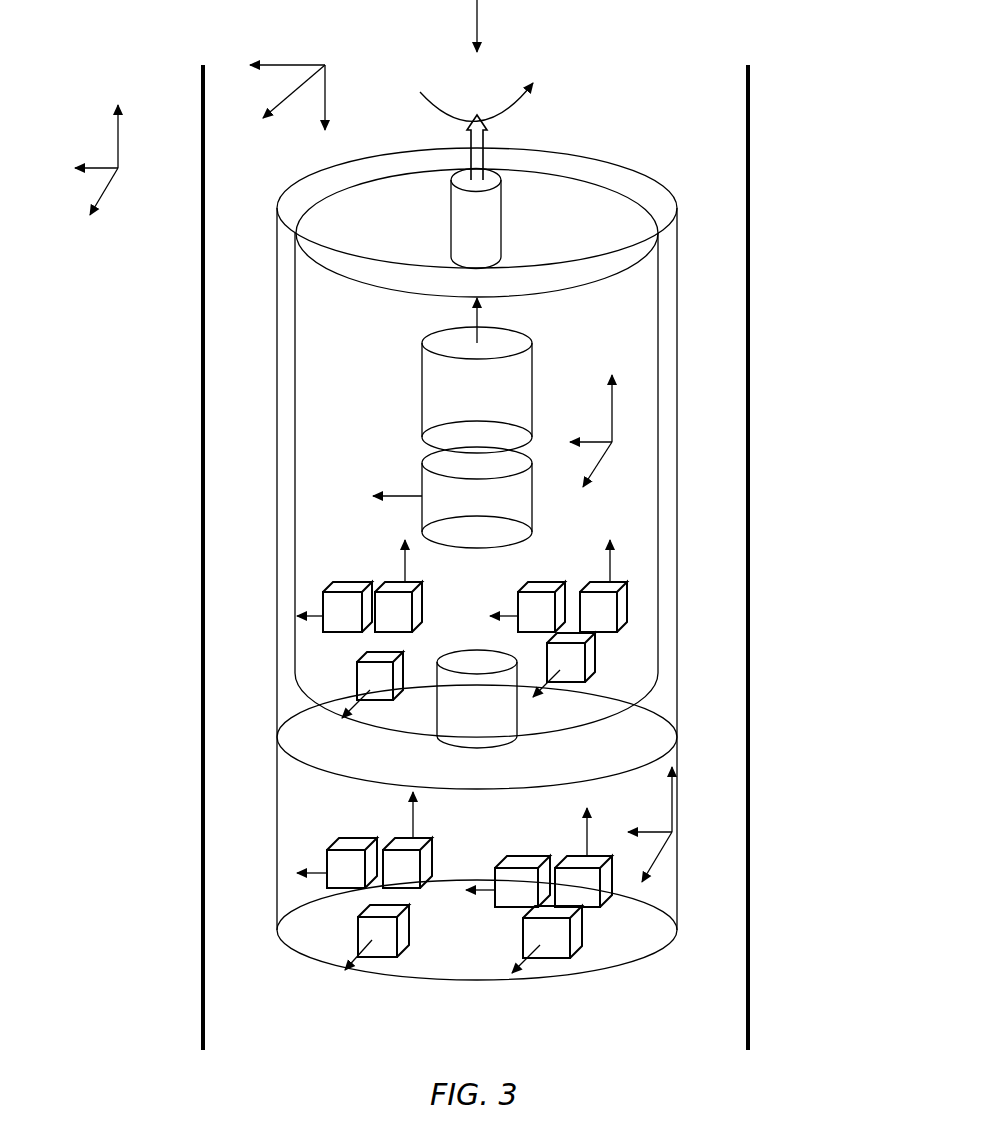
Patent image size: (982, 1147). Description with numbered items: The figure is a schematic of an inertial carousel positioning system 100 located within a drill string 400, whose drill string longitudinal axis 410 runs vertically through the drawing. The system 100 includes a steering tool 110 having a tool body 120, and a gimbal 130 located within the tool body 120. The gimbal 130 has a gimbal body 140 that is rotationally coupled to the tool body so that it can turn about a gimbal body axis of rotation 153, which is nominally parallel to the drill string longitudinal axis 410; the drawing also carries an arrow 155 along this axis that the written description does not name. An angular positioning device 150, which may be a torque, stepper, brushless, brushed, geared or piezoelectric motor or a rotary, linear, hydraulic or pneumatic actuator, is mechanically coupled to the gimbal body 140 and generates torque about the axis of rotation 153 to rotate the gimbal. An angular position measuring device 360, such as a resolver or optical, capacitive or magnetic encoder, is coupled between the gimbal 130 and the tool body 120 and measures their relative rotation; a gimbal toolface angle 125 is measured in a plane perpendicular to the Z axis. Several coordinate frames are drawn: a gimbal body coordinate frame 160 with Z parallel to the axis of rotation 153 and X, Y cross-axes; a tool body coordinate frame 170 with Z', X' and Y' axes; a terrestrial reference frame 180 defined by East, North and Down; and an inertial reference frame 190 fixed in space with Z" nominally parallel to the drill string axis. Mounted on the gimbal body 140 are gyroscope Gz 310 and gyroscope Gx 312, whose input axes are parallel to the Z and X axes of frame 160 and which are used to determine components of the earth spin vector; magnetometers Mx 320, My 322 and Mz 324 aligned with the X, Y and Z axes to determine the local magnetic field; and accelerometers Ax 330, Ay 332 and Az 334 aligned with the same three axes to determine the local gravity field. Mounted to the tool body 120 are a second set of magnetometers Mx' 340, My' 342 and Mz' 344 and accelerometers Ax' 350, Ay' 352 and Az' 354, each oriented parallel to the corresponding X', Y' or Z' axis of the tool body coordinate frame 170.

The inertial carousel positioning system 100 is at (677, 233).
The steering tool 110 is at (705, 451).
The tool body 120 is at (618, 163).
The gimbal toolface angle 125 is at (535, 100).
The gimbal 130 is at (287, 480).
The gimbal body 140 is at (652, 275).
The angular positioning device 150 is at (700, 733).
The gimbal body axis of rotation 153 is at (470, 137).
The upward direction arrow 155 is at (478, 116).
The gimbal body coordinate frame 160 is at (608, 473).
The tool body coordinate frame 170 is at (675, 845).
The terrestrial reference frame 180 is at (322, 62).
The inertial reference frame 190 is at (65, 208).
The gyroscope Gz 310 is at (422, 362).
The gyroscope Gx 312 is at (422, 478).
The magnetometer Mx 320 is at (615, 627).
The magnetometer My 322 is at (585, 660).
The magnetometer Mz 324 is at (627, 595).
The accelerometer Ax 330 is at (323, 593).
The accelerometer Ay 332 is at (357, 673).
The accelerometer Az 334 is at (375, 632).
The magnetometer Mx' 340 is at (502, 908).
The magnetometer My' 342 is at (590, 908).
The magnetometer Mz' 344 is at (553, 958).
The accelerometer Ax' 350 is at (327, 885).
The accelerometer Ay' 352 is at (387, 958).
The accelerometer Az' 354 is at (383, 888).
The angular position measuring device 360 is at (502, 200).
The drill string 400 is at (748, 115).
The drill string longitudinal axis 410 is at (475, 20).